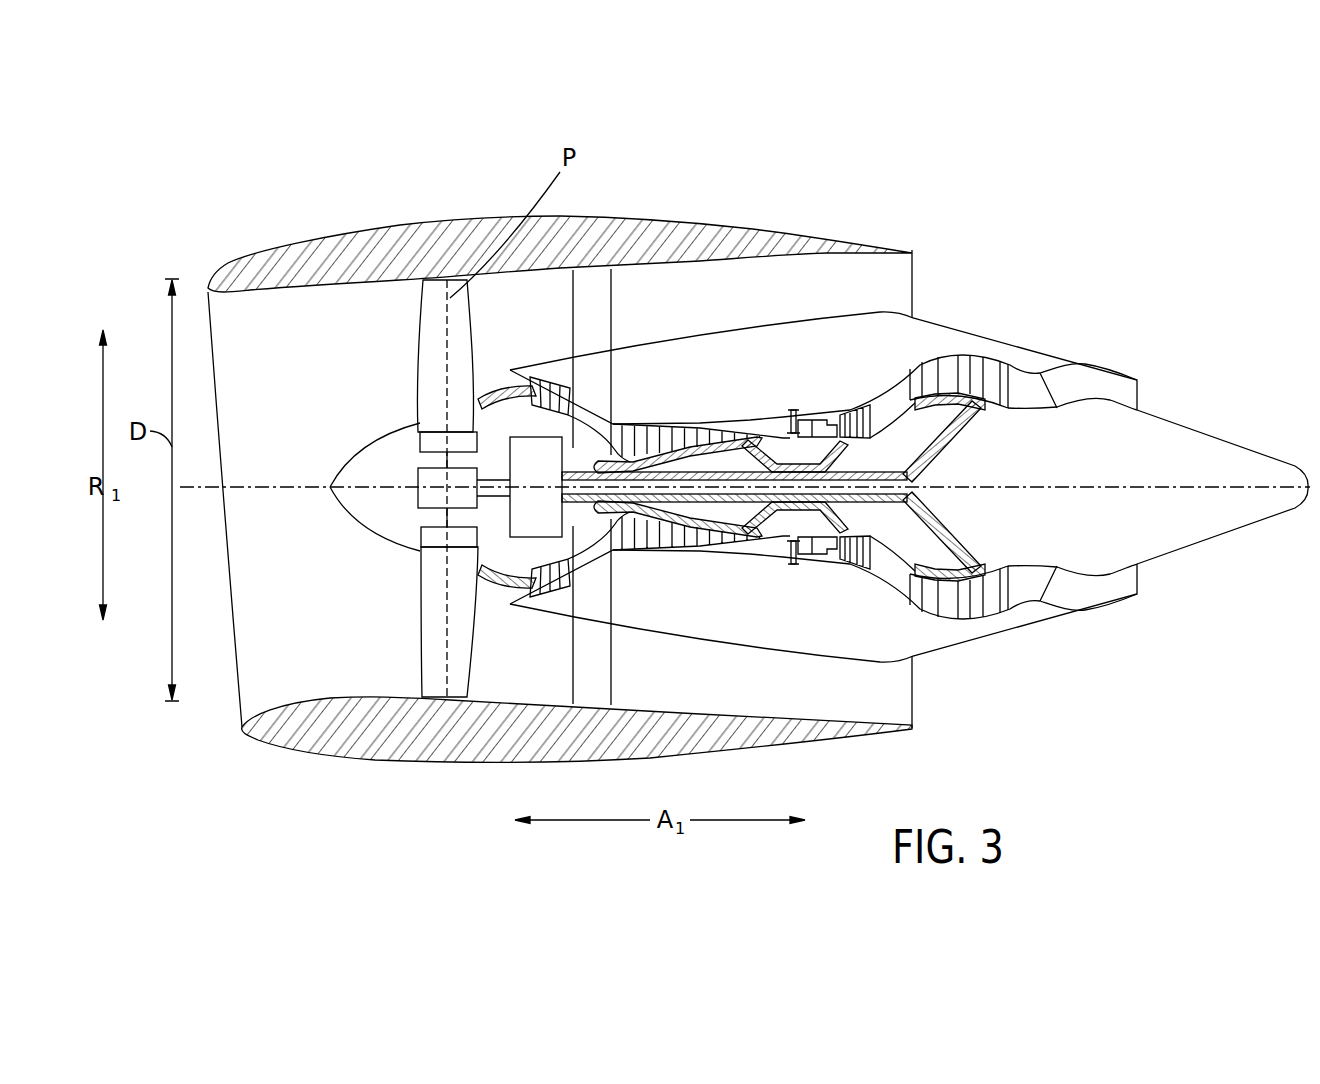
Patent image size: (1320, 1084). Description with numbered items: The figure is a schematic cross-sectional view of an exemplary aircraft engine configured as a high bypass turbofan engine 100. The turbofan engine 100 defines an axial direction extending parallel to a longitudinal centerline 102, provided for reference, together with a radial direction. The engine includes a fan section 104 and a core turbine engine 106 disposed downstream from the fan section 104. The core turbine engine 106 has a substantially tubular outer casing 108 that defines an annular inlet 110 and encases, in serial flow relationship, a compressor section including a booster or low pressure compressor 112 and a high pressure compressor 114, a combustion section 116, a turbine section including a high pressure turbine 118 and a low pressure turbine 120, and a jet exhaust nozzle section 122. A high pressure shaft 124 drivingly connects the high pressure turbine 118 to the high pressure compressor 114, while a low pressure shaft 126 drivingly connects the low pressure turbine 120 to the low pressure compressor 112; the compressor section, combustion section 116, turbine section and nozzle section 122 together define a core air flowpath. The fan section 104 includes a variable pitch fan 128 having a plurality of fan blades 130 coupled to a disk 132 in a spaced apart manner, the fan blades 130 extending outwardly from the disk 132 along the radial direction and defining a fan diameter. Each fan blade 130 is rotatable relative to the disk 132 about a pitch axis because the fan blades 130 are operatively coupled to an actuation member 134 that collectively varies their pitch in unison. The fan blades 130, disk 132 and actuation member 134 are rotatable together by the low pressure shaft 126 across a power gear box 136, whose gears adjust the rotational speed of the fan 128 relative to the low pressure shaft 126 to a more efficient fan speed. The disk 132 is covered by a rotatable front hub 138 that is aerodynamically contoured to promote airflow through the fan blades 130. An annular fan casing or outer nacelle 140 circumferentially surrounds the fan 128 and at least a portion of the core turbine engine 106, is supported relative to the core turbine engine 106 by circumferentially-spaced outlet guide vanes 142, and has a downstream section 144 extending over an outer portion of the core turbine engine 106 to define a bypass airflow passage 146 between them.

The turbofan engine 100 is at (1057, 232).
The longitudinal centerline 102 is at (1078, 490).
The fan section 104 is at (378, 292).
The core turbine engine 106 is at (733, 372).
The outer casing 108 is at (768, 653).
The annular inlet 110 is at (510, 597).
The low pressure compressor 112 is at (578, 560).
The high pressure compressor 114 is at (638, 548).
The combustion section 116 is at (806, 560).
The high pressure turbine 118 is at (933, 548).
The low pressure turbine 120 is at (1000, 625).
The jet exhaust nozzle section 122 is at (1058, 606).
The high pressure shaft 124 is at (812, 438).
The low pressure shaft 126 is at (946, 447).
The variable pitch fan 128 is at (380, 541).
The fan blades 130 is at (418, 638).
The disk 132 is at (437, 440).
The actuation member 134 is at (418, 474).
The power gear box 136 is at (548, 453).
The front hub 138 is at (337, 505).
The outer nacelle 140 is at (468, 762).
The outlet guide vanes 142 is at (610, 300).
The downstream section 144 is at (828, 238).
The bypass airflow passage 146 is at (790, 297).